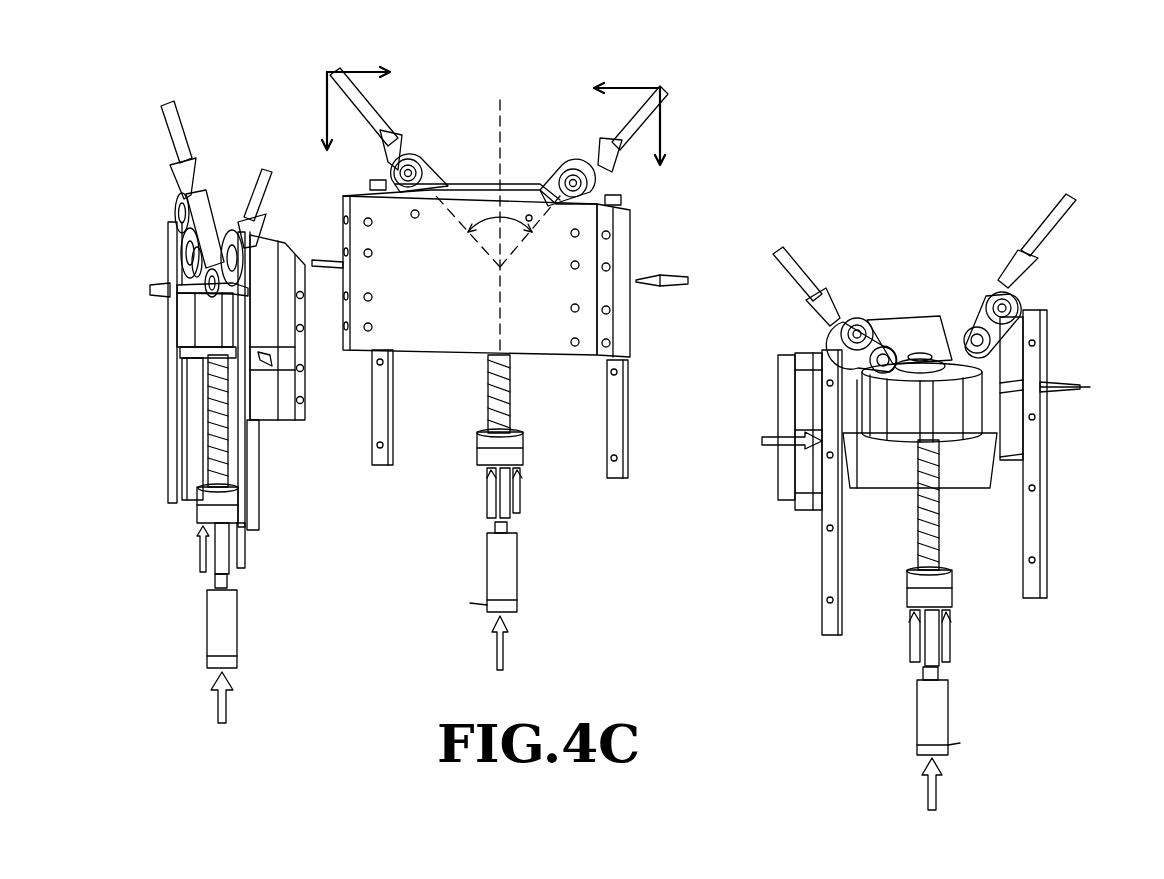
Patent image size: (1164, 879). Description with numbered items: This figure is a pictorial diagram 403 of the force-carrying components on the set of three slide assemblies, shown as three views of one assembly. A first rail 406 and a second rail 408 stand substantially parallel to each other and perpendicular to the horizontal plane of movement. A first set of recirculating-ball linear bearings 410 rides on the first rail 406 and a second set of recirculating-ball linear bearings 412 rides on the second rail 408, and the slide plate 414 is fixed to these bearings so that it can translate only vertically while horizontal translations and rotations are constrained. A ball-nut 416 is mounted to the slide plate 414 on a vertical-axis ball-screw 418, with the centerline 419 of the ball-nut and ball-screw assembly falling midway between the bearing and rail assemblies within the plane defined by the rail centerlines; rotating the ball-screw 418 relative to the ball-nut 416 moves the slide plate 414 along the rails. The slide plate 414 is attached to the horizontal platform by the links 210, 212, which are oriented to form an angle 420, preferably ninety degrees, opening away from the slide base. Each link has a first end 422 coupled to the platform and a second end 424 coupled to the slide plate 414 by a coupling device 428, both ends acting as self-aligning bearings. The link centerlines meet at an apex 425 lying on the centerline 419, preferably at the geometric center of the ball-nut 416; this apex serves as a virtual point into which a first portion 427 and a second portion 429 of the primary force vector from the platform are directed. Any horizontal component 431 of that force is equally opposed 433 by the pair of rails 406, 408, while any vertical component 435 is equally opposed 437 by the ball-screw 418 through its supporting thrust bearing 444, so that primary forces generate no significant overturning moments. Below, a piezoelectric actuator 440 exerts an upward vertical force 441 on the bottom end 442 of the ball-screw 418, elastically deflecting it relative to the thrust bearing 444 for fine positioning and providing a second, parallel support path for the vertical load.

The pictorial diagram 403 is at (138, 79).
The first rail 406 is at (393, 410).
The second rail 408 is at (632, 415).
The first set of recirculating-ball linear bearings 410 is at (1040, 348).
The second set of recirculating-ball linear bearings 412 is at (782, 378).
The slide plate 414 is at (297, 428).
The ball-nut 416 is at (178, 367).
The ball-screw 418 is at (205, 444).
The centerline 419 is at (504, 104).
The angle 420 is at (486, 207).
The first end 422 is at (175, 213).
The second end 424 is at (185, 246).
The apex 425 is at (496, 270).
The first portion of primary force vector 427 is at (268, 190).
The coupling device 428 is at (177, 270).
The second portion of primary force vector 429 is at (176, 124).
The horizontal component 431 is at (370, 66).
The opposing horizontal force 433 is at (150, 296).
The vertical component 435 is at (310, 127).
The opposing vertical force 437 is at (198, 575).
The piezoelectric actuator 440 is at (238, 614).
The upward vertical force 441 is at (228, 690).
The bottom end 442 is at (214, 578).
The thrust bearing 444 is at (195, 518).
The link 210 is at (204, 188).
The link 212 is at (254, 230).